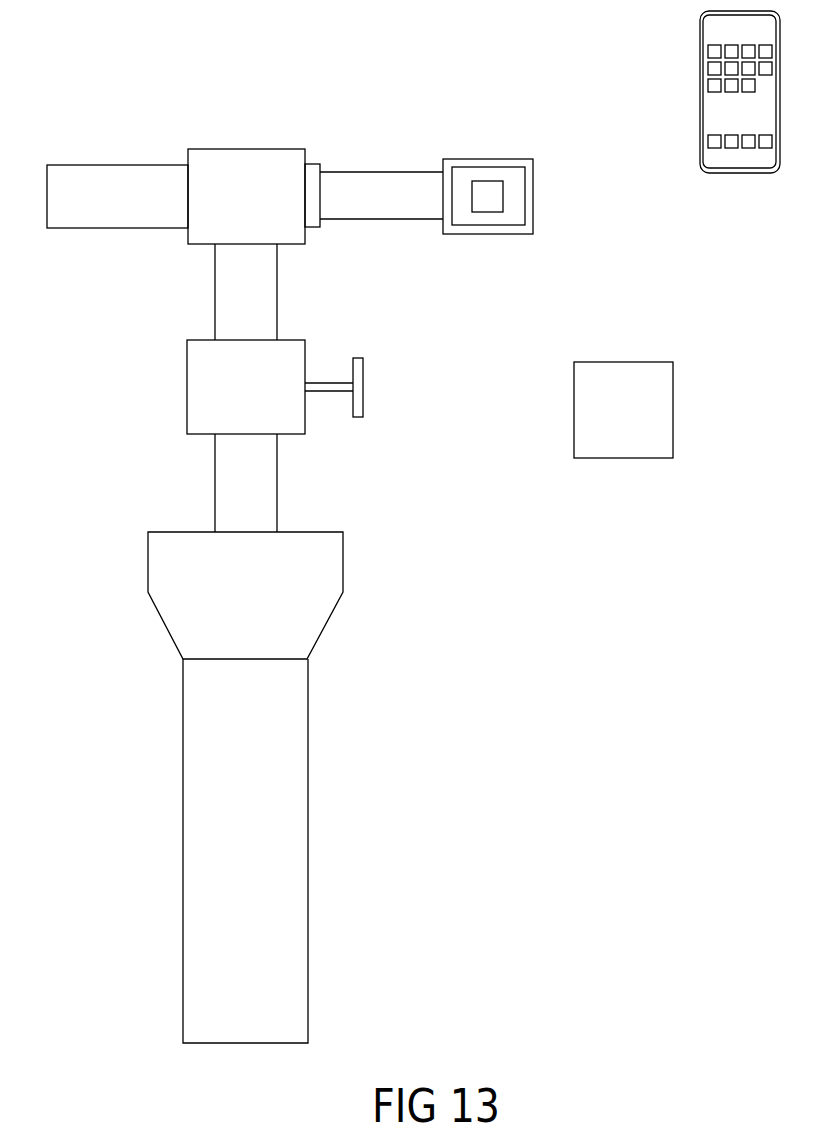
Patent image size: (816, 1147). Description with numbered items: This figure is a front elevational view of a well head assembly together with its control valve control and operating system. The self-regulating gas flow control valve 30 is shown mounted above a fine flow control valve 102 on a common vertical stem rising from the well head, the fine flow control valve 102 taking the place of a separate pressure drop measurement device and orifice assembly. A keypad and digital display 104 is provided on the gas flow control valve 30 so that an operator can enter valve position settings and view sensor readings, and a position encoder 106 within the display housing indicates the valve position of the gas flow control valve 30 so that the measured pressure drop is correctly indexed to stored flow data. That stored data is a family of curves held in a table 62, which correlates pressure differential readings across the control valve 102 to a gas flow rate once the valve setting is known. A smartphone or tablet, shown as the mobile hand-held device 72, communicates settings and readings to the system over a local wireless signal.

The self-regulating gas flow control valve 30 is at (247, 165).
The fine flow control valve 102 is at (283, 420).
The keypad and digital display 104 is at (478, 172).
The position encoder 106 is at (494, 207).
The table 62 is at (588, 412).
The mobile hand-held device 72 is at (712, 107).